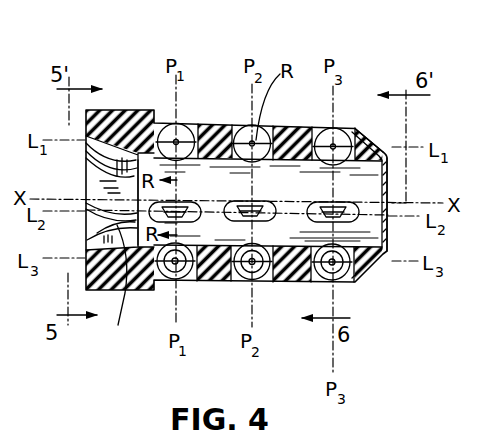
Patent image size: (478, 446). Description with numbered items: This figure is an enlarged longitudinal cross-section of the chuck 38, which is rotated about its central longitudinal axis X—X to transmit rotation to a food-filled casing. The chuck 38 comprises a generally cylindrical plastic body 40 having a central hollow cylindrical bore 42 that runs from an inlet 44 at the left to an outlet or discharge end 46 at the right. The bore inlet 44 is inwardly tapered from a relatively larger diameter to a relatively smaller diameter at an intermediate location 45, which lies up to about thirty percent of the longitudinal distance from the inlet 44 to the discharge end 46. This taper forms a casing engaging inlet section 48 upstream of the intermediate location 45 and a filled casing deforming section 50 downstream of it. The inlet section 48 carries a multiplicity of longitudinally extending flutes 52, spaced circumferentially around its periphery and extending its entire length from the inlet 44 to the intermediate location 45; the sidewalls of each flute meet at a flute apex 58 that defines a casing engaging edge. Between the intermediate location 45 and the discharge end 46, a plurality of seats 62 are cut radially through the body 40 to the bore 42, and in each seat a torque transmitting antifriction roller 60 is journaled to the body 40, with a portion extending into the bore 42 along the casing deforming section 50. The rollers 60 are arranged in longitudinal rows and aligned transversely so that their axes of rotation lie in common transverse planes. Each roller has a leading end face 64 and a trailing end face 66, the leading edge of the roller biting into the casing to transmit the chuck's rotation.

The chuck 38 is at (201, 92).
The chuck body 40 is at (110, 118).
The central hollow cylindrical bore 42 is at (205, 166).
The inlet 44 is at (100, 181).
The intermediate location 45 is at (134, 186).
The discharge end 46 is at (388, 178).
The casing engaging inlet section 48 is at (138, 222).
The casing deforming section 50 is at (257, 133).
The flutes 52 is at (86, 157).
The flute apex 58 is at (87, 240).
The torque transmitting antifriction roller 60 is at (322, 128).
The seats 62 is at (237, 282).
The leading end face 64 is at (347, 283).
The trailing end face 66 is at (364, 158).